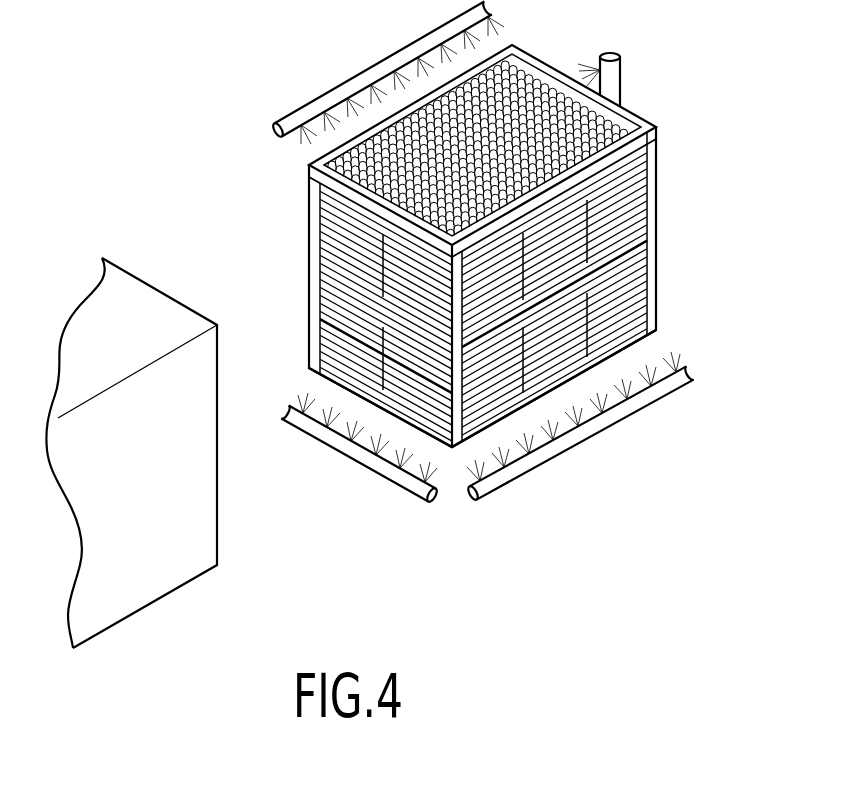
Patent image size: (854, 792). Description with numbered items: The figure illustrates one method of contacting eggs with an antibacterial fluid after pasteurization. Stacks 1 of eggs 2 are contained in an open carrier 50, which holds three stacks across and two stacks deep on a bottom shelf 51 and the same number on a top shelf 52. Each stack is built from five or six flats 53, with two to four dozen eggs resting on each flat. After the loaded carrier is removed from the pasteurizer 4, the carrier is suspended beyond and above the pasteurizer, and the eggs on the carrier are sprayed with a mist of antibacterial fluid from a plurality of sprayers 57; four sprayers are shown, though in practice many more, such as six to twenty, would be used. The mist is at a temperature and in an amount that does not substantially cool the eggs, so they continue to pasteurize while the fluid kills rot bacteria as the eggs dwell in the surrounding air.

The stacks of eggs 1 is at (660, 210).
The eggs 2 is at (540, 78).
The pasteurizer 4 is at (195, 440).
The open carrier 50 is at (633, 152).
The bottom shelf 51 is at (628, 340).
The top shelf 52 is at (628, 262).
The flats 53 is at (635, 302).
The sprayers 57 is at (333, 92).